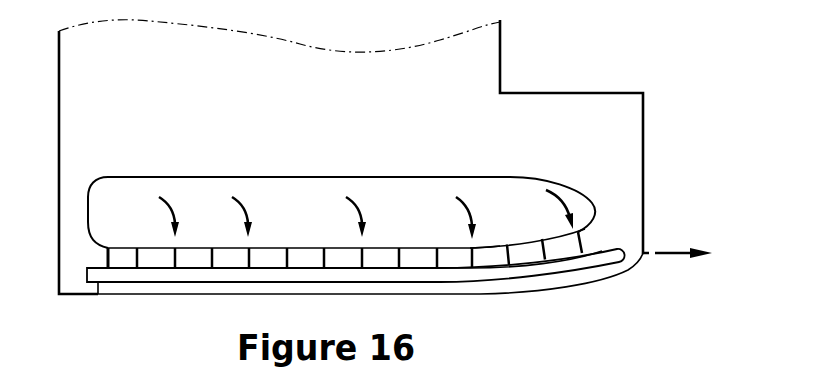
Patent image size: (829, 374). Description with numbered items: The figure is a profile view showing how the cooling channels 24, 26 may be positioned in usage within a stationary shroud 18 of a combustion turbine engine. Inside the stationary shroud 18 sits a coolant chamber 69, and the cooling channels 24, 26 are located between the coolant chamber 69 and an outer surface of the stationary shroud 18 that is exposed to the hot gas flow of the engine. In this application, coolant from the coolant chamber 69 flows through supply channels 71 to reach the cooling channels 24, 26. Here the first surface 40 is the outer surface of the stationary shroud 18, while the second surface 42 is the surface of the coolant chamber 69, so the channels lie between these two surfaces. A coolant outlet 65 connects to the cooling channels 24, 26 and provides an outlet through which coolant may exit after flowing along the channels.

The stationary shroud 18 is at (275, 117).
The first set of cooling channels 24 is at (188, 283).
The second set of cooling channels 26 is at (150, 266).
The first surface 40 is at (510, 292).
The second surface 42 is at (487, 248).
The coolant outlet 65 is at (635, 270).
The coolant chamber 69 is at (322, 222).
The supply channels 71 is at (106, 257).